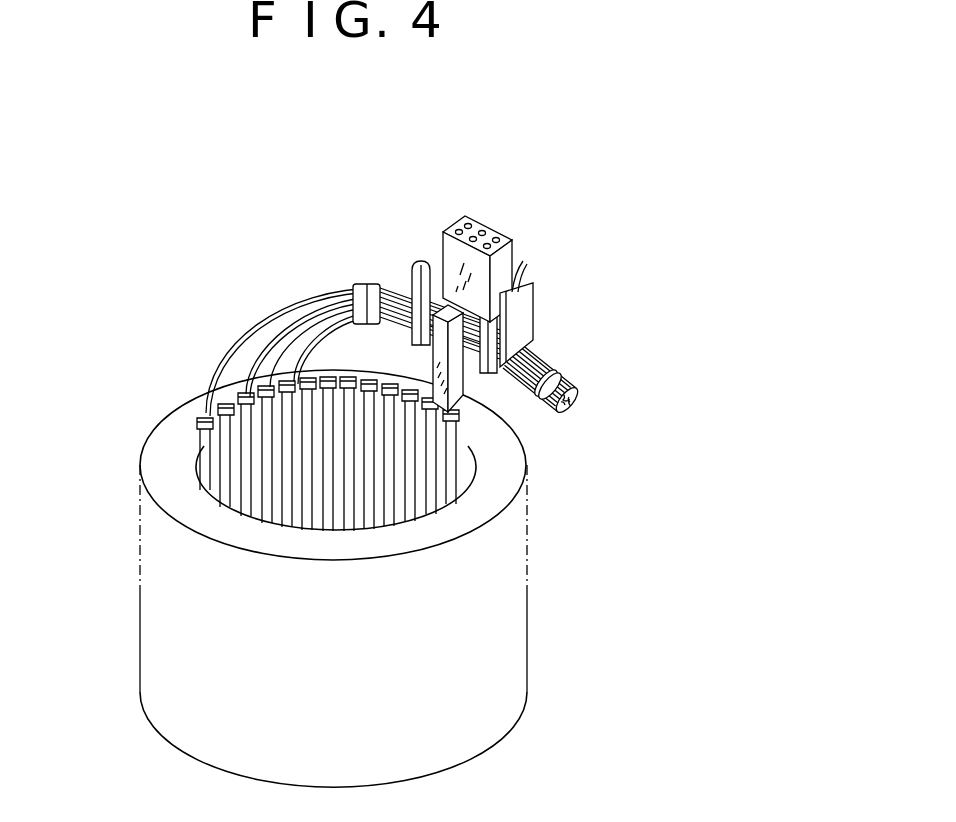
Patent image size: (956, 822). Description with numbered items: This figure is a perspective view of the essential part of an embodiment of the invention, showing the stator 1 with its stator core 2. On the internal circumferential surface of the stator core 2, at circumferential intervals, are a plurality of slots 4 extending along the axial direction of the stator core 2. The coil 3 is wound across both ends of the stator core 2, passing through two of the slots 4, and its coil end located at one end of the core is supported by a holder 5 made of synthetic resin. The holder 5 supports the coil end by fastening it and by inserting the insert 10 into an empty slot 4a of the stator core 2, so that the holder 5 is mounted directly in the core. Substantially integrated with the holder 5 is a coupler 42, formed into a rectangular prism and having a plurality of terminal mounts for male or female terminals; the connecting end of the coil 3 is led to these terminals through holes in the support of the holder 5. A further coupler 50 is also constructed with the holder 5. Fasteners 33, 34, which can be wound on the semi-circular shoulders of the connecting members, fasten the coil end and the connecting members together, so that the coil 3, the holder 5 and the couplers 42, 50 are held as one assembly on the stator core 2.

The stator 1 is at (160, 386).
The stator core 2 is at (158, 452).
The coil 3 is at (232, 340).
The slots 4 is at (277, 468).
The empty slot 4a is at (443, 497).
The holder 5 is at (560, 314).
The insert 10 is at (430, 362).
The fastener 33 is at (568, 383).
The fastener 34 is at (430, 263).
The coupler 42 is at (503, 235).
The coupler 50 is at (520, 277).